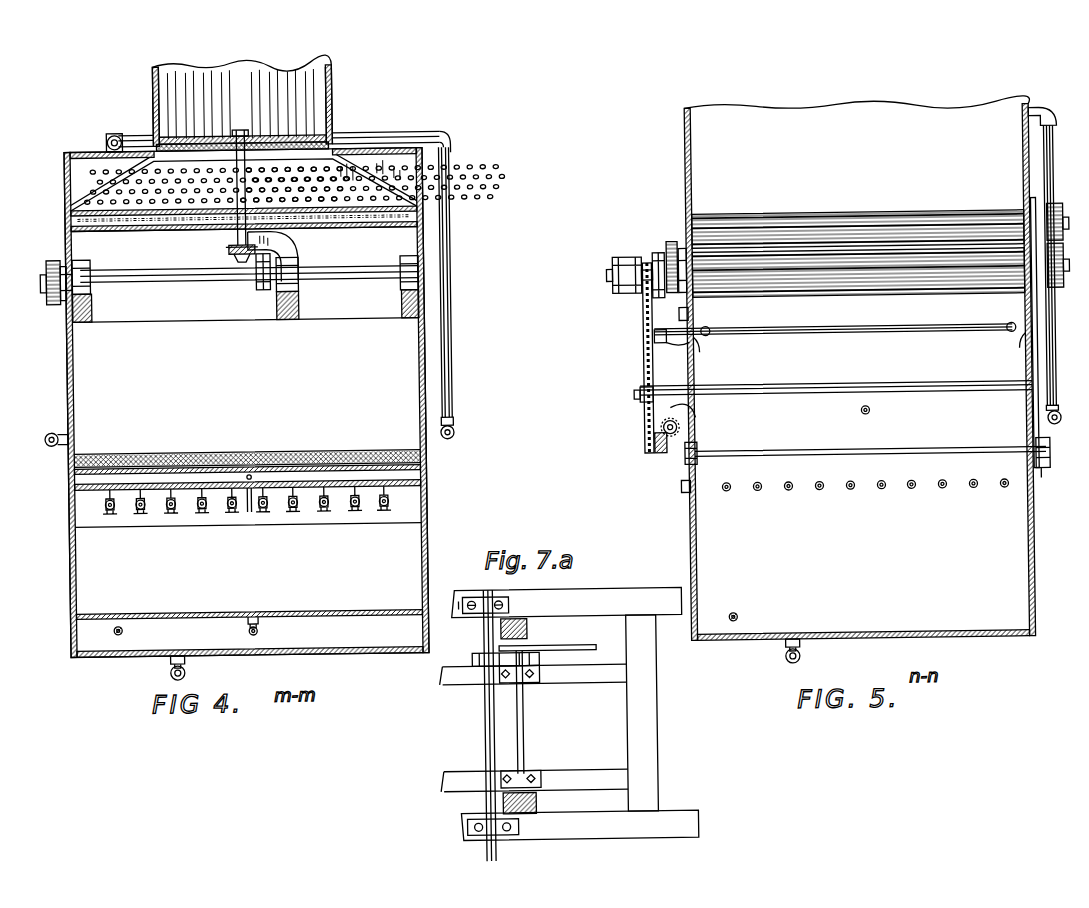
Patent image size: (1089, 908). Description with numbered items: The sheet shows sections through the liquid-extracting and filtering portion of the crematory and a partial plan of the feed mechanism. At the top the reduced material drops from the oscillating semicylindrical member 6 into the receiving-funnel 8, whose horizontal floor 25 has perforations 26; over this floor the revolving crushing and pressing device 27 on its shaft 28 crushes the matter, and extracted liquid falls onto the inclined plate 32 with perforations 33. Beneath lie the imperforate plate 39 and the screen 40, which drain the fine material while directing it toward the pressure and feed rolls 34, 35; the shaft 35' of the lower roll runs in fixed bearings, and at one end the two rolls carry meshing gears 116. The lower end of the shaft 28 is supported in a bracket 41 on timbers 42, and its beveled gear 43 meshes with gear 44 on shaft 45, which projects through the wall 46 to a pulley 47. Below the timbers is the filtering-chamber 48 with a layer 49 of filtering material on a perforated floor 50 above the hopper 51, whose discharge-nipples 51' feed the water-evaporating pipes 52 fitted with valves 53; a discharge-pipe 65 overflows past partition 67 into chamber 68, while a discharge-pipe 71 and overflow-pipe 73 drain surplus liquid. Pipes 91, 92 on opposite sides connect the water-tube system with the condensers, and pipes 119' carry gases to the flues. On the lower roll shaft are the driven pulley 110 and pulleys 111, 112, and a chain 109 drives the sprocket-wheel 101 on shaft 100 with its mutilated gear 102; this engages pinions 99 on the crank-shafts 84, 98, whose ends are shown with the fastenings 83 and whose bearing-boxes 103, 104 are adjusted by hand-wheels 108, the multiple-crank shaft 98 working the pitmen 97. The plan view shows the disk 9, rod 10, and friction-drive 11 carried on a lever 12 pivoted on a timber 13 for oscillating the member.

In FIG. 4, the semicylindrical member 6 is at (68, 415).
In FIG. 4, the receiving-funnel 8 is at (330, 95).
In FIG. 7a, the disk 9 is at (527, 649).
In FIG. 7a, the rod 10 is at (612, 638).
In FIG. 7a, the friction-drive 11 is at (473, 657).
In FIG. 7a, the lever 12 is at (497, 600).
In FIG. 7a, the timber 13 is at (679, 813).
In FIG. 4, the horizontal floor 25 is at (334, 134).
In FIG. 4, the perforations 26 is at (155, 160).
In FIG. 4, the revolving crushing and pressing device 27 is at (188, 141).
In FIG. 4, the shaft 28 is at (249, 140).
In FIG. 4, the inclined plate 32 is at (350, 175).
In FIG. 4, the perforations 33 is at (398, 177).
In FIG. 5, the upper pressure and feed roll 34 is at (738, 214).
In FIG. 5, the lower pressure and feed roll 35 is at (858, 287).
In FIG. 5, the shaft of the lower roll 35' is at (588, 276).
In FIG. 4, the imperforate plate 39 is at (146, 221).
In FIG. 4, the screen 40 is at (190, 217).
In FIG. 4, the bracket 41 is at (293, 243).
In FIG. 4, the timbers 42 is at (338, 300).
In FIG. 4, the beveled gear 43 is at (231, 260).
In FIG. 4, the gear 44 is at (262, 291).
In FIG. 4, the shaft 45 is at (297, 291).
In FIG. 5, the wall 46 is at (694, 175).
In FIG. 4, the pulley 47 is at (44, 286).
In FIG. 4, the filtering-chamber 48 is at (296, 392).
In FIG. 4, the layer of filtering material 49 is at (238, 447).
In FIG. 4, the perforated floor 50 is at (380, 478).
In FIG. 4, the hopper 51 is at (243, 519).
In FIG. 4, the discharge-nipples 51' is at (186, 519).
In FIG. 4, the water-evaporating pipes 52 is at (388, 508).
In FIG. 5, the water-evaporating pipes 52 is at (939, 481).
In FIG. 4, the valves 53 is at (359, 512).
In FIG. 4, the discharge-pipe 65 is at (248, 511).
In FIG. 4, the partition 67 is at (98, 576).
In FIG. 4, the chamber 68 is at (225, 583).
In FIG. 4, the discharge-pipe 71 is at (256, 630).
In FIG. 5, the overflow-pipe 73 is at (872, 410).
In FIG. 5, the nut 83 is at (1012, 334).
In FIG. 5, the crank-shaft 84 is at (724, 330).
In FIG. 4, the pipe 91 is at (52, 446).
In FIG. 5, the pipe 91 is at (695, 416).
In FIG. 4, the pipe 92 is at (470, 437).
In FIG. 5, the pipe 92 is at (1070, 435).
In FIG. 5, the pitmen 97 is at (1048, 456).
In FIG. 5, the multiple-crank shaft 98 is at (770, 452).
In FIG. 5, the pinion 99 is at (662, 454).
In FIG. 5, the shaft 100 is at (775, 390).
In FIG. 5, the sprocket-wheel 101 is at (644, 415).
In FIG. 5, the mutilated gear 102 is at (652, 443).
In FIG. 5, the bearing-box 103 is at (700, 456).
In FIG. 5, the bearing-box 104 is at (1022, 348).
In FIG. 5, the hand-wheels 108 is at (669, 402).
In FIG. 5, the chain 109 is at (644, 378).
In FIG. 5, the driven pulley 110 is at (626, 262).
In FIG. 5, the pulley 111 is at (656, 258).
In FIG. 5, the pulley 112 is at (673, 240).
In FIG. 5, the gears 116 is at (1046, 290).
In FIG. 4, the pipes 119' is at (145, 632).
In FIG. 5, the pipes 119' is at (759, 617).